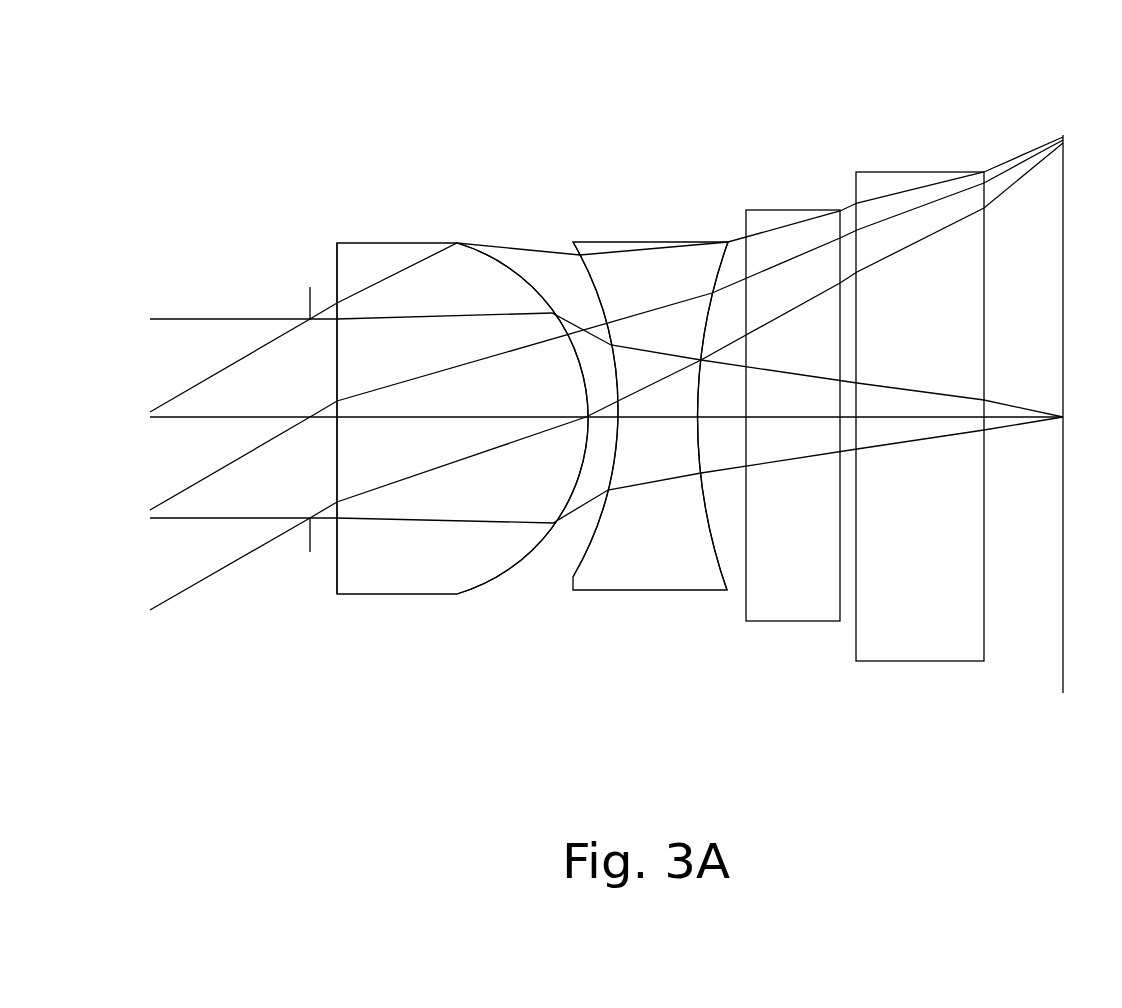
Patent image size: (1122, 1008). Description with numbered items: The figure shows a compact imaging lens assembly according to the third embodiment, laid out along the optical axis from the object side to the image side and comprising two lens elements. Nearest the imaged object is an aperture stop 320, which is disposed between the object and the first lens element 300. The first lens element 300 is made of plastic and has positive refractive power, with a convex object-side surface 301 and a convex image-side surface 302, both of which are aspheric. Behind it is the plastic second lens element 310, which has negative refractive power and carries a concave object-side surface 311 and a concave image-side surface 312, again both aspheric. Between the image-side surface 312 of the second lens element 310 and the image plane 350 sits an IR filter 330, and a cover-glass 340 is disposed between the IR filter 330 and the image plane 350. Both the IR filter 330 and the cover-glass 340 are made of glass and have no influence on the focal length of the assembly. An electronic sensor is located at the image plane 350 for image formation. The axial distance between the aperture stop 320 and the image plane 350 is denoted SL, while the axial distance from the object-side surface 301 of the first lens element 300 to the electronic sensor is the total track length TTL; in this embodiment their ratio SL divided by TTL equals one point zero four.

The first lens element 300 is at (400, 304).
The object-side surface of the first lens element 301 is at (337, 455).
The image-side surface of the first lens element 302 is at (576, 462).
The second lens element 310 is at (643, 283).
The object-side surface of the second lens element 311 is at (612, 458).
The image-side surface of the second lens element 312 is at (698, 455).
The aperture stop 320 is at (308, 301).
The IR filter 330 is at (782, 286).
The cover-glass 340 is at (908, 236).
The image plane 350 is at (1060, 188).